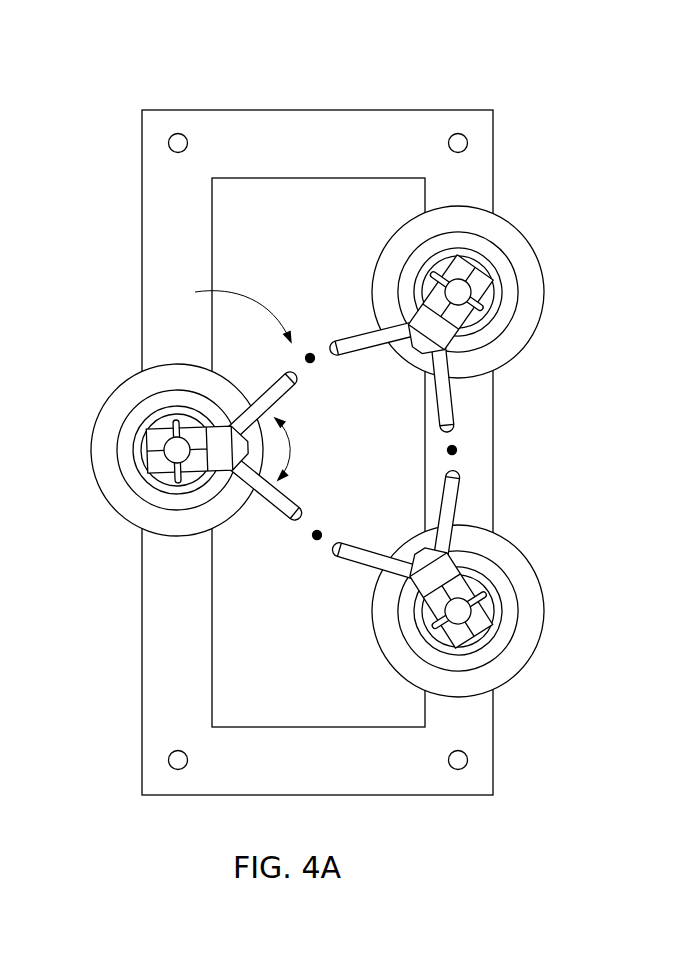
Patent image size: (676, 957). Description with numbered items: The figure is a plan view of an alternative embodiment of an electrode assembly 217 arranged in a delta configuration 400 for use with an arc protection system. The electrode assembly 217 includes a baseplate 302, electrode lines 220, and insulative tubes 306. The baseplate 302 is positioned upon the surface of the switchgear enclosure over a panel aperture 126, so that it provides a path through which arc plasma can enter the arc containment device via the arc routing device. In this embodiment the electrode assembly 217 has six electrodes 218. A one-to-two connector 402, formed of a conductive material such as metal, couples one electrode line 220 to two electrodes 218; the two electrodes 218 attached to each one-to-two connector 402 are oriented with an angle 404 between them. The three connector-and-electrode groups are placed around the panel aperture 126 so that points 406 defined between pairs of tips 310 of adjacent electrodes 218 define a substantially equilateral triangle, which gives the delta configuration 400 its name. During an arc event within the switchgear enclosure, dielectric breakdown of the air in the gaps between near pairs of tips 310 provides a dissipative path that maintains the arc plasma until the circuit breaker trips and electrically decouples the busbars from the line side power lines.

The delta configuration 400 is at (116, 66).
The baseplate 302 is at (277, 163).
The electrode assembly 217 is at (224, 313).
The electrodes 218 is at (352, 328).
The points 406 is at (310, 353).
The tips 310 is at (292, 364).
The electrode lines 220 is at (471, 291).
The one-to-two connector 402 is at (462, 314).
The angle 404 is at (291, 442).
The panel aperture 126 is at (364, 474).
The insulative tubes 306 is at (385, 642).